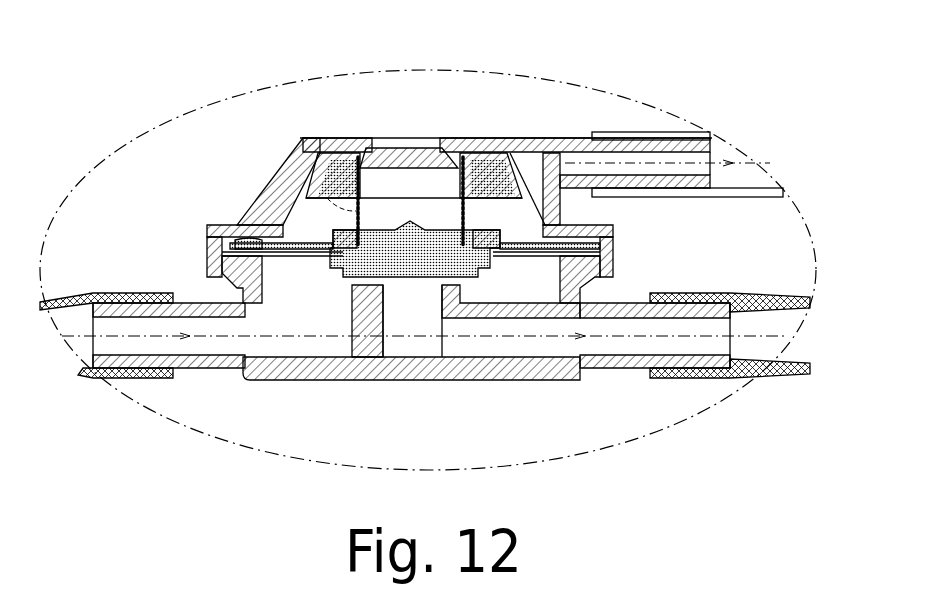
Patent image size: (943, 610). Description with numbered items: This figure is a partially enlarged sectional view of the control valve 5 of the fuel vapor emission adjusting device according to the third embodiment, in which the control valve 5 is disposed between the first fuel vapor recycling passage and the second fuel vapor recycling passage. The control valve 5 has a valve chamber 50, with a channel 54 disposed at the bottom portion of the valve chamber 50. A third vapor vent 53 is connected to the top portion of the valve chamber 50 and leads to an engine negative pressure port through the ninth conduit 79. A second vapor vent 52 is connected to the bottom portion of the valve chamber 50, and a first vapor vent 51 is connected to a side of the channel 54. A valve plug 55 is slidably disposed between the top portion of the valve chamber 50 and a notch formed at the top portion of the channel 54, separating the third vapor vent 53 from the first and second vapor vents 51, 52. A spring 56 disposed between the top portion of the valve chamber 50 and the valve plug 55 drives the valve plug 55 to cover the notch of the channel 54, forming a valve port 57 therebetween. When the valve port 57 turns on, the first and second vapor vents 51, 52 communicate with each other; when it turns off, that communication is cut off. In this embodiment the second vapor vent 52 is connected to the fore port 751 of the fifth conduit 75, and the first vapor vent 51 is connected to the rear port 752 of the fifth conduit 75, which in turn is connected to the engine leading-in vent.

The control valve 5 is at (410, 130).
The valve chamber 50 is at (432, 185).
The first vapor vent 51 is at (484, 347).
The second vapor vent 52 is at (250, 347).
The third vapor vent 53 is at (420, 205).
The channel 54 is at (413, 343).
The valve plug 55 is at (300, 243).
The spring 56 is at (313, 185).
The valve port 57 is at (480, 283).
The fifth conduit 75 is at (733, 270).
The fore port 751 is at (140, 378).
The rear port 752 is at (770, 298).
The ninth conduit 79 is at (627, 137).